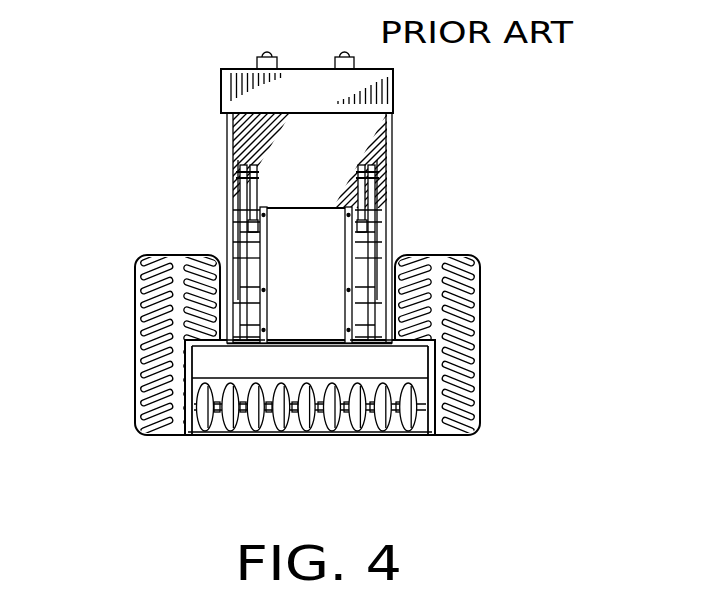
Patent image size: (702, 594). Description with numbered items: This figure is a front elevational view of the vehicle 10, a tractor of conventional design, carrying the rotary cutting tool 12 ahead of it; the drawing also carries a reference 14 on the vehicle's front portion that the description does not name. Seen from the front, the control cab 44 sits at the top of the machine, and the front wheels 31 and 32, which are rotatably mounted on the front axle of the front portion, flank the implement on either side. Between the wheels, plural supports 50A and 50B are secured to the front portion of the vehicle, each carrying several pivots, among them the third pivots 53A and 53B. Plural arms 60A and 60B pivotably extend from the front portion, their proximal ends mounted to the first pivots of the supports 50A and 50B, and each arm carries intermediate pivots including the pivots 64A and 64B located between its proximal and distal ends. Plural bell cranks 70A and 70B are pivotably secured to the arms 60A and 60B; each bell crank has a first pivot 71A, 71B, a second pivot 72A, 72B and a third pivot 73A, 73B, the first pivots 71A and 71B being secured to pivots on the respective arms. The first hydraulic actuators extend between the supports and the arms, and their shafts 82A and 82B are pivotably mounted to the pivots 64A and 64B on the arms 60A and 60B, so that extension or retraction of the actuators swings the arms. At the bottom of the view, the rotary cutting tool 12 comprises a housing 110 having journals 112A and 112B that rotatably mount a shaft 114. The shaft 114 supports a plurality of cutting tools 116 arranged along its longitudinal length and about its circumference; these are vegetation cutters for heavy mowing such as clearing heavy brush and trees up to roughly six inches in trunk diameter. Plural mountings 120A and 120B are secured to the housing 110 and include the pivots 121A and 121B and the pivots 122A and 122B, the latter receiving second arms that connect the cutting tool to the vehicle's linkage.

The vehicle 10 is at (548, 104).
The rotary cutting tool 12 is at (393, 437).
The frame 14 is at (102, 148).
The front wheel 31 is at (480, 427).
The front wheel 32 is at (132, 402).
The control cab 44 is at (257, 140).
The support 50A is at (358, 288).
The support 50B is at (257, 288).
The third pivot 53A is at (390, 186).
The third pivot 53B is at (229, 185).
The arm 60A is at (362, 333).
The arm 60B is at (252, 333).
The pivot 64A is at (365, 257).
The pivot 64B is at (250, 257).
The bell crank 70A is at (388, 211).
The bell crank 70B is at (226, 211).
The first pivot 71A is at (378, 243).
The first pivot 71B is at (237, 242).
The second pivot 72A is at (388, 204).
The second pivot 72B is at (226, 204).
The third pivot 73A is at (388, 175).
The third pivot 73B is at (229, 175).
The shaft 82A is at (388, 182).
The shaft 82B is at (229, 180).
The housing 110 is at (288, 346).
The journal 112A is at (428, 432).
The journal 112B is at (194, 410).
The shaft 114 is at (375, 437).
The cutting tools 116 is at (258, 432).
The mounting 120A is at (355, 347).
The mounting 120B is at (260, 347).
The pivot 121A is at (370, 303).
The pivot 121B is at (245, 303).
The pivot 122A is at (380, 222).
The pivot 122B is at (240, 222).